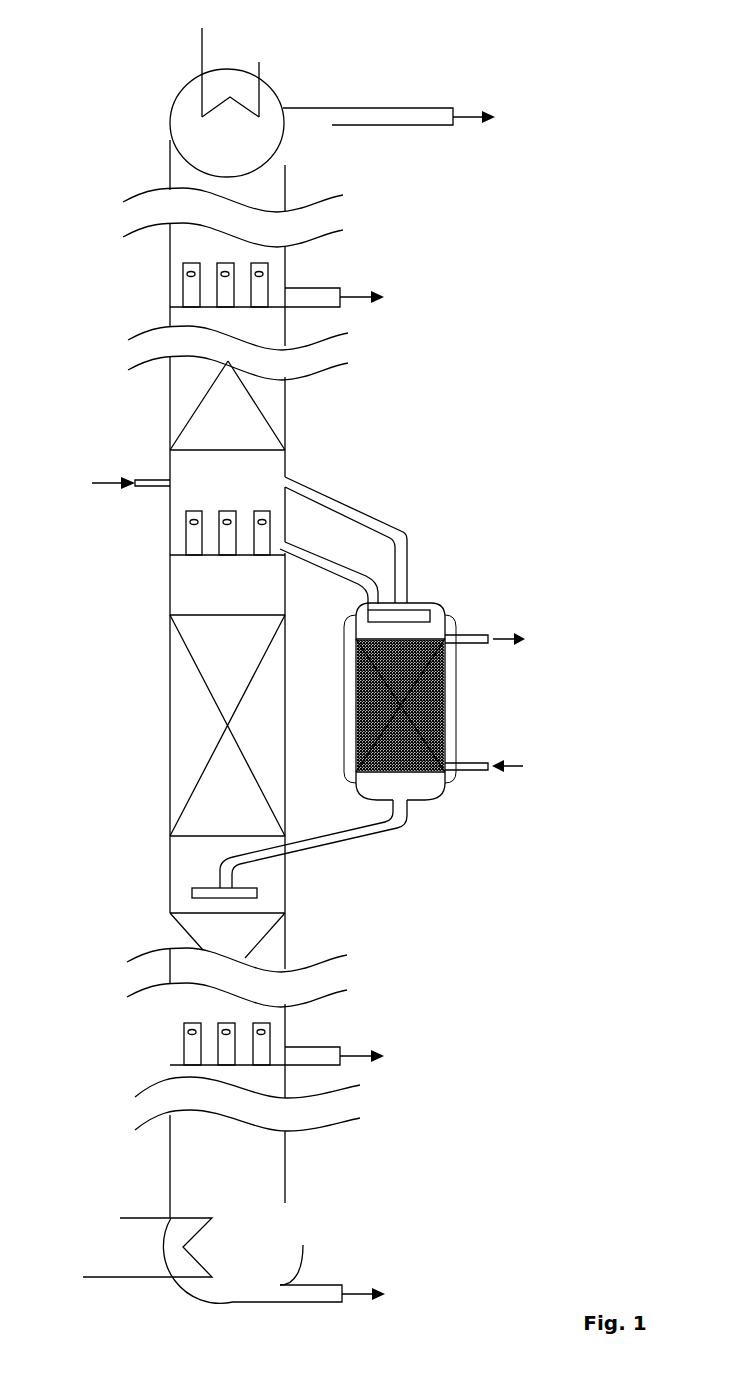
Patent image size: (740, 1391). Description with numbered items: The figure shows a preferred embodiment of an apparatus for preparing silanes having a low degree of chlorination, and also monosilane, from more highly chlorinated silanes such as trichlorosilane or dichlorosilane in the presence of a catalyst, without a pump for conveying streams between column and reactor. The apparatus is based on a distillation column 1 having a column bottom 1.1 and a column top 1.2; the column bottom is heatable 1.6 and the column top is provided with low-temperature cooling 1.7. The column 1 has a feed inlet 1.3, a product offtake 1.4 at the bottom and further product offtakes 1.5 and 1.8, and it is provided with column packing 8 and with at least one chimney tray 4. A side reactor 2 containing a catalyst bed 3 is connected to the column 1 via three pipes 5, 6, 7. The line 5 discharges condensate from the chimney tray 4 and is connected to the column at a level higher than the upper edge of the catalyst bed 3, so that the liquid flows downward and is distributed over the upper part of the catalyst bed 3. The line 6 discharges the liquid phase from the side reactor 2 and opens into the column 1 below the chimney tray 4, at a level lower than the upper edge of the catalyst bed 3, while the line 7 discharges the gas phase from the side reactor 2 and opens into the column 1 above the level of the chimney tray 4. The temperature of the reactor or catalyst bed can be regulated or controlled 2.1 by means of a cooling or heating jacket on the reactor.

The distillation column 1 is at (170, 880).
The column bottom 1.1 is at (316, 1245).
The column top 1.2 is at (251, 123).
The feed inlet 1.3 is at (96, 486).
The product offtake 1.4 is at (308, 1265).
The further product offtake 1.5 is at (369, 678).
The heatable column bottom 1.6 is at (131, 1238).
The low-temperature cooling 1.7 is at (262, 67).
The further product offtake 1.8 is at (423, 120).
The side reactor 2 is at (443, 605).
The temperature regulation or control 2.1 is at (521, 767).
The catalyst bed 3 is at (400, 705).
The chimney tray 4 is at (167, 557).
The line 5 is at (370, 583).
The line 6 is at (299, 849).
The line 7 is at (305, 483).
The column packing 8 is at (227, 725).